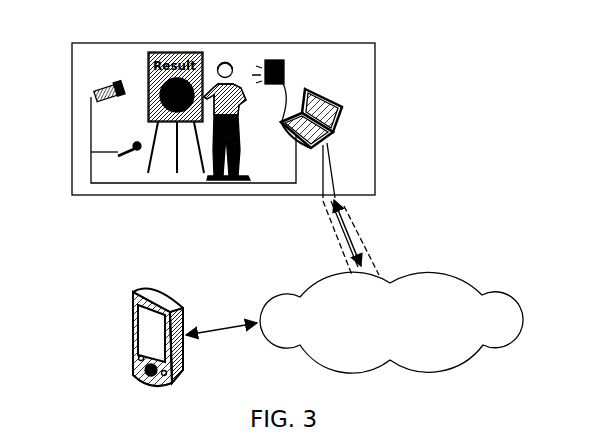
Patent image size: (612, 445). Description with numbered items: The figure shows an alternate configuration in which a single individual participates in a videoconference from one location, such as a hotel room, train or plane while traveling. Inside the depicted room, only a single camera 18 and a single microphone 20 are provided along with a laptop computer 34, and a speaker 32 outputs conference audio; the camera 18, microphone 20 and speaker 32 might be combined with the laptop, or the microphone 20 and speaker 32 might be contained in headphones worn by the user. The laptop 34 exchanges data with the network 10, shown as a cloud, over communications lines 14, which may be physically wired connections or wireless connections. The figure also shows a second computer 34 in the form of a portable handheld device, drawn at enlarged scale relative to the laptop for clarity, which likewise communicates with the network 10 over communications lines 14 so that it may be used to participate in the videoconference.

The network 10 is at (462, 279).
The communications lines 14 is at (357, 230).
The camera 18 is at (98, 90).
The microphone 20 is at (126, 155).
The speaker 32 is at (285, 79).
The laptop computer 34 is at (322, 92).